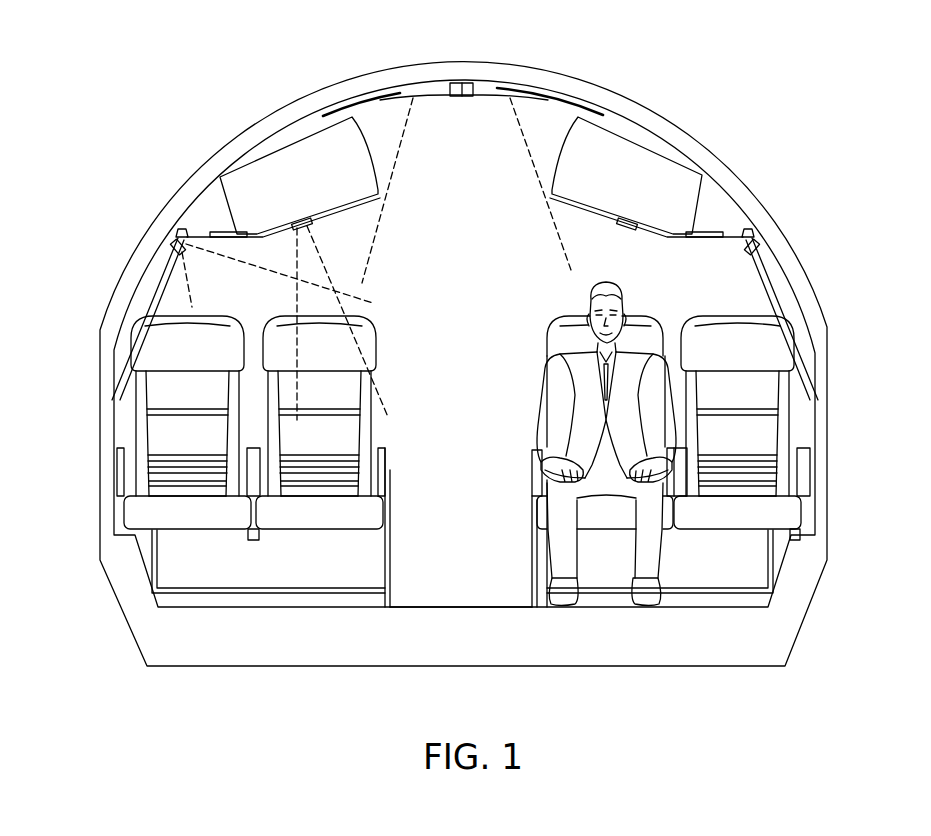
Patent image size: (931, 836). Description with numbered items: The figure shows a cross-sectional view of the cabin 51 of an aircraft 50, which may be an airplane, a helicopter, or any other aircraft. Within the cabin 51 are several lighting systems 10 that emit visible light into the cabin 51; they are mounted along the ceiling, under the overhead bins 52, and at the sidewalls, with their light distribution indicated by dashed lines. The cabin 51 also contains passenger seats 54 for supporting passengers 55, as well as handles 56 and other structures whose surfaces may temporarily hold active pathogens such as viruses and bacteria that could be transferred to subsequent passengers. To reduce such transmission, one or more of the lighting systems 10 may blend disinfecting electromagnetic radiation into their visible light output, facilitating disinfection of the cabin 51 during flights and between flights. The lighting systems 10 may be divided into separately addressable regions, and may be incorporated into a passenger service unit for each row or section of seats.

The aircraft 50 is at (124, 87).
The lighting system 10 is at (447, 93).
The overhead bin 52 is at (252, 198).
The passenger seat 54 is at (347, 397).
The passenger 55 is at (688, 293).
The cabin 51 is at (483, 508).
The handle 56 is at (393, 462).